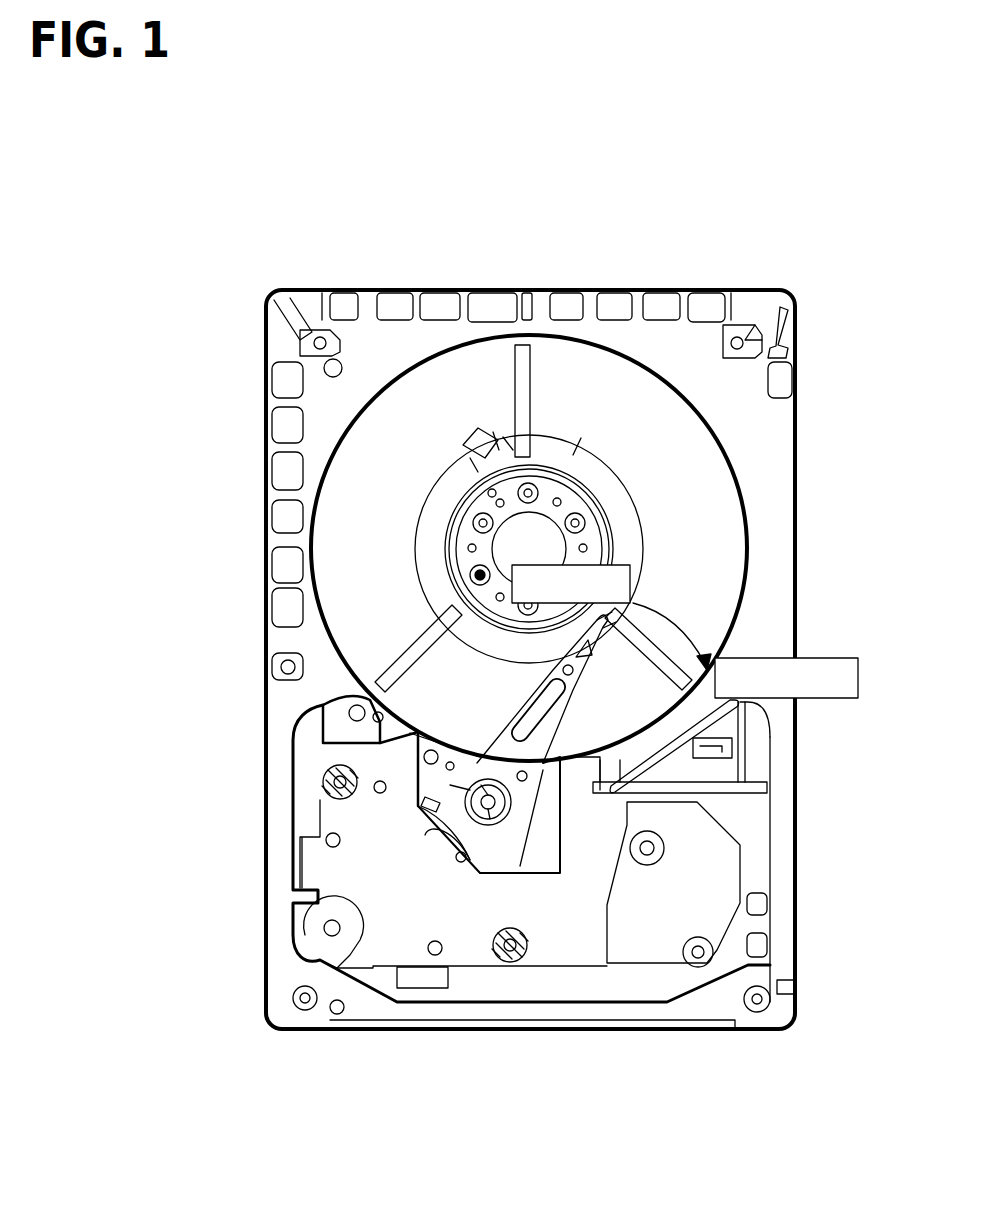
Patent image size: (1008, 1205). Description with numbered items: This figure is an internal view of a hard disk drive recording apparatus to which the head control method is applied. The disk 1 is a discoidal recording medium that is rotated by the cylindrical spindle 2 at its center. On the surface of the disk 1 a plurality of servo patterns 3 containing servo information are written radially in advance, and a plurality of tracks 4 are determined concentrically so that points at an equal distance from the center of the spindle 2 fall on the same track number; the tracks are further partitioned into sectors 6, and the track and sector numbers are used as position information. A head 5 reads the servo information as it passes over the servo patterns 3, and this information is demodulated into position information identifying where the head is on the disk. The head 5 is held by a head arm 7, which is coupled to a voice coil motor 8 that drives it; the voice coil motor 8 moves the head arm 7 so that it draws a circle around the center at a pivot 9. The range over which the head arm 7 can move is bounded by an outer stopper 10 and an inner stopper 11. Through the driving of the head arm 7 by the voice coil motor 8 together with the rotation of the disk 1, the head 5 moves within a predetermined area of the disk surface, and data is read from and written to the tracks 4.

The disk 1 is at (690, 400).
The spindle 2 is at (598, 492).
The servo patterns 3 is at (530, 360).
The tracks 4 is at (647, 543).
The head 5 is at (647, 585).
The sectors 6 is at (470, 428).
The head arm 7 is at (560, 785).
The voice coil motor 8 is at (416, 930).
The pivot 9 is at (455, 775).
The outer stopper 10 is at (340, 782).
The inner stopper 11 is at (508, 965).